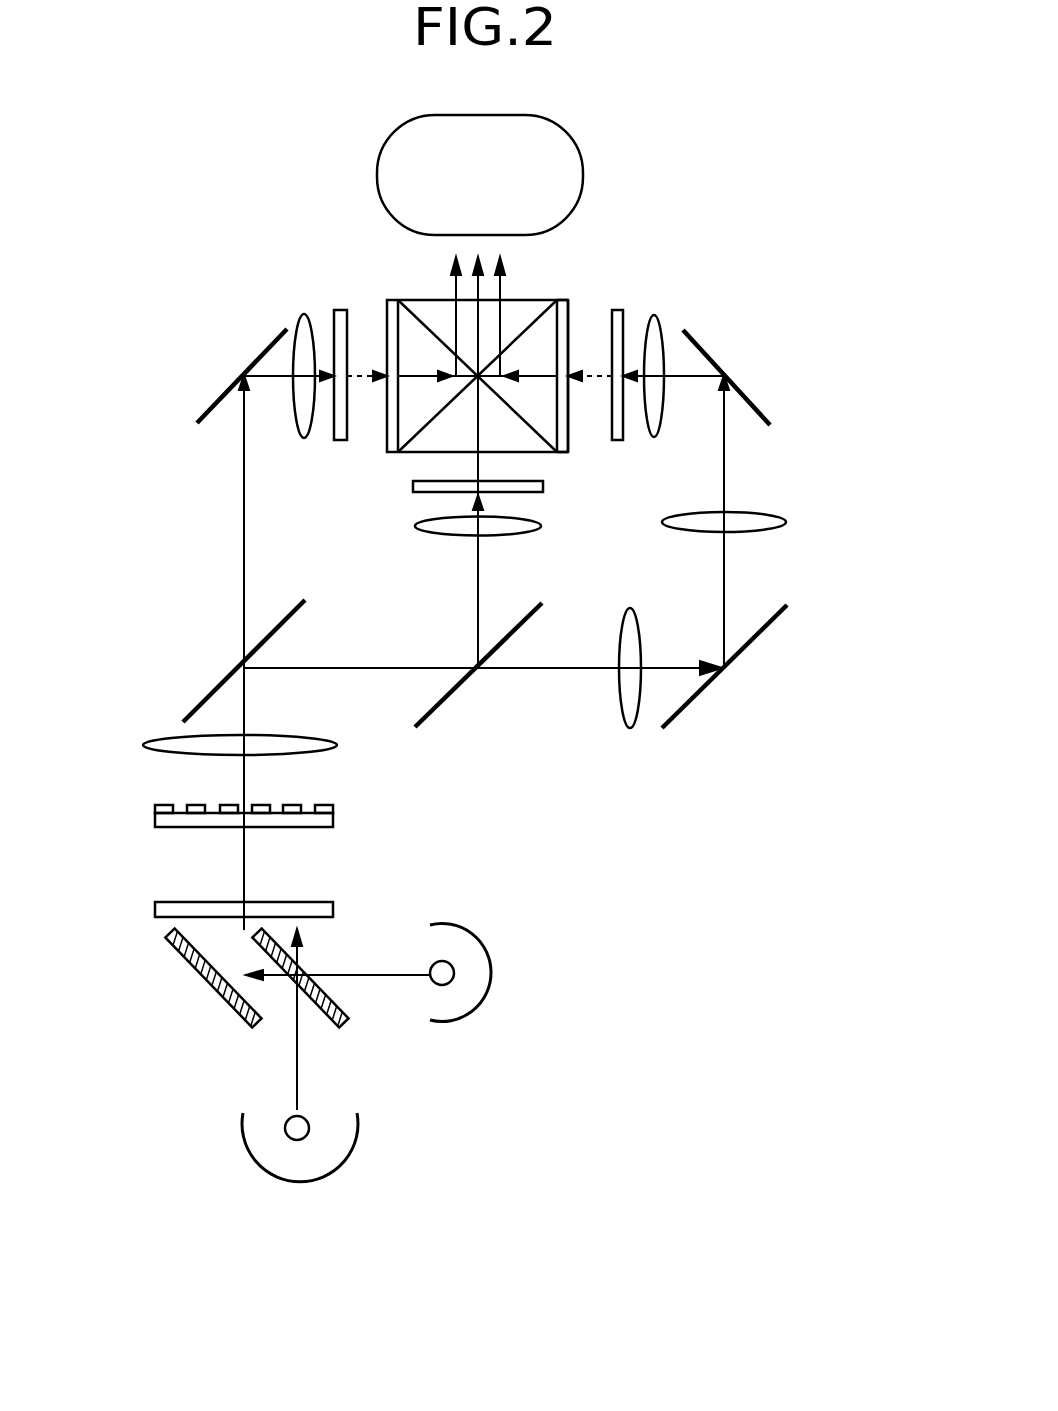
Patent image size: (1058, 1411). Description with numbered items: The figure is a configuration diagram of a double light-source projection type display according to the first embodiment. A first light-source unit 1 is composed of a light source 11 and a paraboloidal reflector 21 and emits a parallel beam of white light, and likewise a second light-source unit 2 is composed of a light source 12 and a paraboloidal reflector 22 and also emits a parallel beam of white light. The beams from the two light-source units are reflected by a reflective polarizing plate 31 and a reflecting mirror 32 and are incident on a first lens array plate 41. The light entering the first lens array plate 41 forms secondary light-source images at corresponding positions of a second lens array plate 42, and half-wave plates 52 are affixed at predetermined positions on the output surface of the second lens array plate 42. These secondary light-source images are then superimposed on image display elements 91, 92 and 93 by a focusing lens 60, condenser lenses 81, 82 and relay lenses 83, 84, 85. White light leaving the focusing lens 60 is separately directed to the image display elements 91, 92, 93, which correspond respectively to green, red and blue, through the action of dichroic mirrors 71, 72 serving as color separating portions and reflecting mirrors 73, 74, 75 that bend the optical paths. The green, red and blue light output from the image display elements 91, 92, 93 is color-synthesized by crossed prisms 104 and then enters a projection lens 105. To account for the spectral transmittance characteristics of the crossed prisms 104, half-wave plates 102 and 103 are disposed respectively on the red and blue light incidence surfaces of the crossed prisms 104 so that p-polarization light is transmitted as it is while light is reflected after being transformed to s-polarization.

The first light-source unit 1 is at (293, 1218).
The light source 11 is at (307, 1137).
The paraboloidal reflector 21 is at (268, 1173).
The second light-source unit 2 is at (535, 993).
The light source 12 is at (511, 1008).
The paraboloidal reflector 22 is at (493, 962).
The reflective polarizing plate 31 is at (260, 948).
The reflecting mirror 32 is at (227, 1002).
The first lens array plate 41 is at (333, 908).
The second lens array plate 42 is at (252, 801).
The half-wave plates 52 is at (157, 805).
The focusing lens 60 is at (160, 740).
The dichroic mirror 71 is at (215, 683).
The dichroic mirror 72 is at (442, 708).
The reflecting mirror 73 is at (203, 408).
The reflecting mirror 74 is at (700, 690).
The reflecting mirror 75 is at (755, 395).
The condenser lens 81 is at (541, 527).
The condenser lens 82 is at (298, 322).
The relay lens 83 is at (632, 728).
The relay lens 84 is at (786, 524).
The relay lens 85 is at (660, 320).
The image display element 91 is at (545, 486).
The image display element 92 is at (339, 310).
The image display element 93 is at (618, 310).
The half-wave plate 102 is at (390, 306).
The half-wave plate 103 is at (569, 306).
The crossed prisms 104 is at (437, 317).
The projection lens 105 is at (582, 162).